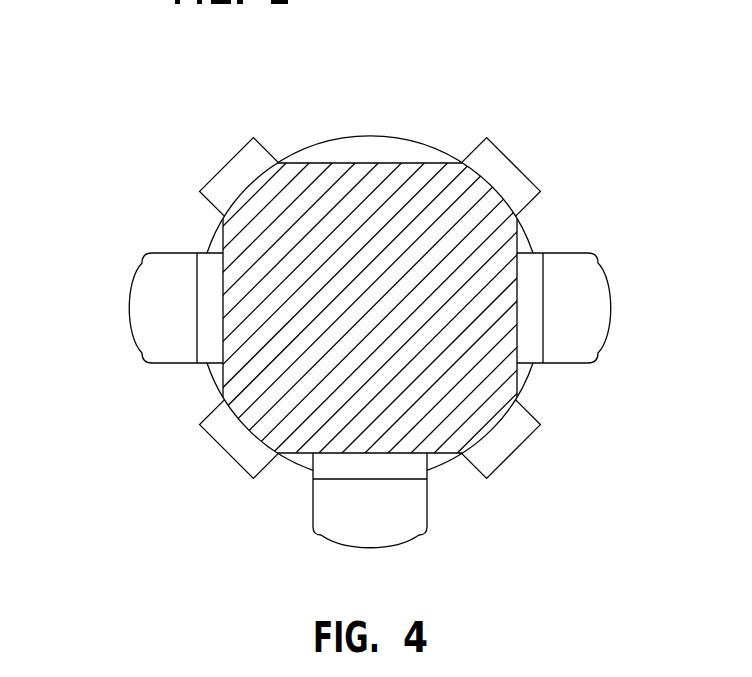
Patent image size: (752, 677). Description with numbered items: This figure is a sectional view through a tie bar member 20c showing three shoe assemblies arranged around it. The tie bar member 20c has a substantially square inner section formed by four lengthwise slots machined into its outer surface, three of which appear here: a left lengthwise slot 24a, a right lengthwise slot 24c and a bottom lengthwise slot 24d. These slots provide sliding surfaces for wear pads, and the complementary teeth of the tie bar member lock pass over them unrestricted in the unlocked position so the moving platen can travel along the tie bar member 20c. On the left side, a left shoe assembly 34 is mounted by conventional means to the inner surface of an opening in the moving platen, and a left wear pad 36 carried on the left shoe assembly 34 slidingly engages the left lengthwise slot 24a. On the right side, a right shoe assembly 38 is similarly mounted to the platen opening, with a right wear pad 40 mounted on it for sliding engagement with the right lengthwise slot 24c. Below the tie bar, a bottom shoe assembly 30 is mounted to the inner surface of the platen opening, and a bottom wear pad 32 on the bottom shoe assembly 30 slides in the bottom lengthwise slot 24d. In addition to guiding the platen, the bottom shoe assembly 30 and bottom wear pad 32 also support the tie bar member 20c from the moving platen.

The tie bar member 20c is at (362, 113).
The left lengthwise slot 24a is at (215, 218).
The right wear pad 40 is at (536, 250).
The right lengthwise slot 24c is at (521, 396).
The bottom lengthwise slot 24d is at (447, 458).
The left shoe assembly 34 is at (129, 308).
The left wear pad 36 is at (210, 364).
The right shoe assembly 38 is at (612, 306).
The bottom shoe assembly 30 is at (368, 548).
The bottom wear pad 32 is at (312, 472).